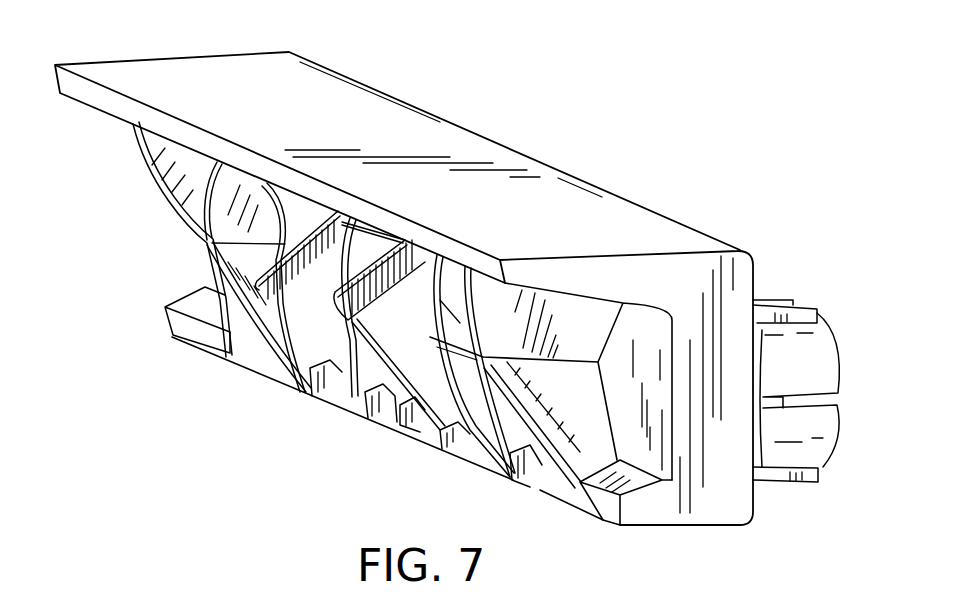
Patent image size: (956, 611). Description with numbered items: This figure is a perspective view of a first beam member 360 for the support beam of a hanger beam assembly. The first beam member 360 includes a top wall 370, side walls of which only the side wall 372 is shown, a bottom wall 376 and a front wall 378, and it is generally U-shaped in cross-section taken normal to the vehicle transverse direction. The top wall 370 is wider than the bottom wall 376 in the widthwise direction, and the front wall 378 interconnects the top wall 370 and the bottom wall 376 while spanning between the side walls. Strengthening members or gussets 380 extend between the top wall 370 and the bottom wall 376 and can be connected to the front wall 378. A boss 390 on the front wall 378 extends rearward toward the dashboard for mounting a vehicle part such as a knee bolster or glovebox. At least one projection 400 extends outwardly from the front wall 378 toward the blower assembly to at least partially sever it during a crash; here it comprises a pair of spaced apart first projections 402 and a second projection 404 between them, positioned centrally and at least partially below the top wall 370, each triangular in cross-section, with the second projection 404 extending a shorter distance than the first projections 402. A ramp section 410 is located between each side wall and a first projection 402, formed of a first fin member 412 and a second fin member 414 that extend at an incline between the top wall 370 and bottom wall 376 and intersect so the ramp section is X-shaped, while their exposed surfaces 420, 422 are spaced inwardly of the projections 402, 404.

The first beam member 360 is at (297, 417).
The top wall 370 is at (387, 130).
The side wall 372 is at (737, 293).
The bottom wall 376 is at (663, 525).
The front wall 378 is at (660, 337).
The strengthening member 380 is at (408, 397).
The boss 390 is at (807, 448).
The projection 400 is at (313, 218).
The first projection 402 is at (410, 257).
The second projection 404 is at (380, 255).
The ramp section 410 is at (190, 243).
The first fin member 412 is at (273, 347).
The second fin member 414 is at (224, 303).
The exposed surface 420 is at (441, 432).
The exposed surface 422 is at (203, 273).